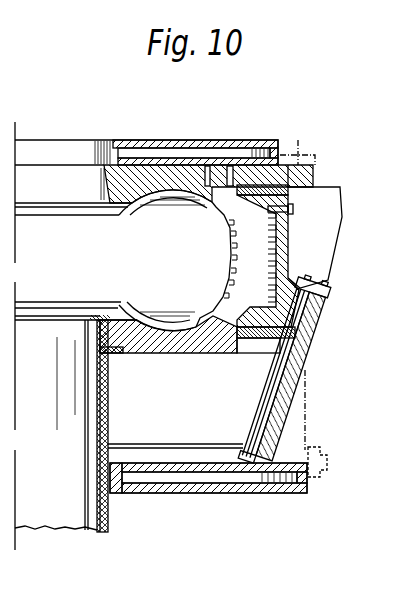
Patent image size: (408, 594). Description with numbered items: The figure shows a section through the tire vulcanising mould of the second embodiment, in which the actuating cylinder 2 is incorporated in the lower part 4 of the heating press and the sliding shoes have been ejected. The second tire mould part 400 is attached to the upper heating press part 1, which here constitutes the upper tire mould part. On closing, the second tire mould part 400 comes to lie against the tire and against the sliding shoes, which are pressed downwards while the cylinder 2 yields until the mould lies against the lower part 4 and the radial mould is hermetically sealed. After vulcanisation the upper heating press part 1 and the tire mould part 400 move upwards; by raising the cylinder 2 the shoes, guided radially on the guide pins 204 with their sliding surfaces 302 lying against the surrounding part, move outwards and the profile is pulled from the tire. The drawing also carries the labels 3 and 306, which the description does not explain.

The upper heating press part 1 is at (196, 140).
The actuating cylinder 2 is at (97, 530).
The ball joint 3 is at (222, 252).
The lower part of the heating press 4 is at (155, 490).
The guide pin 204 is at (262, 415).
The sliding surface 302 is at (338, 187).
The screw 306 is at (293, 209).
The second tire mould part 400 is at (128, 170).